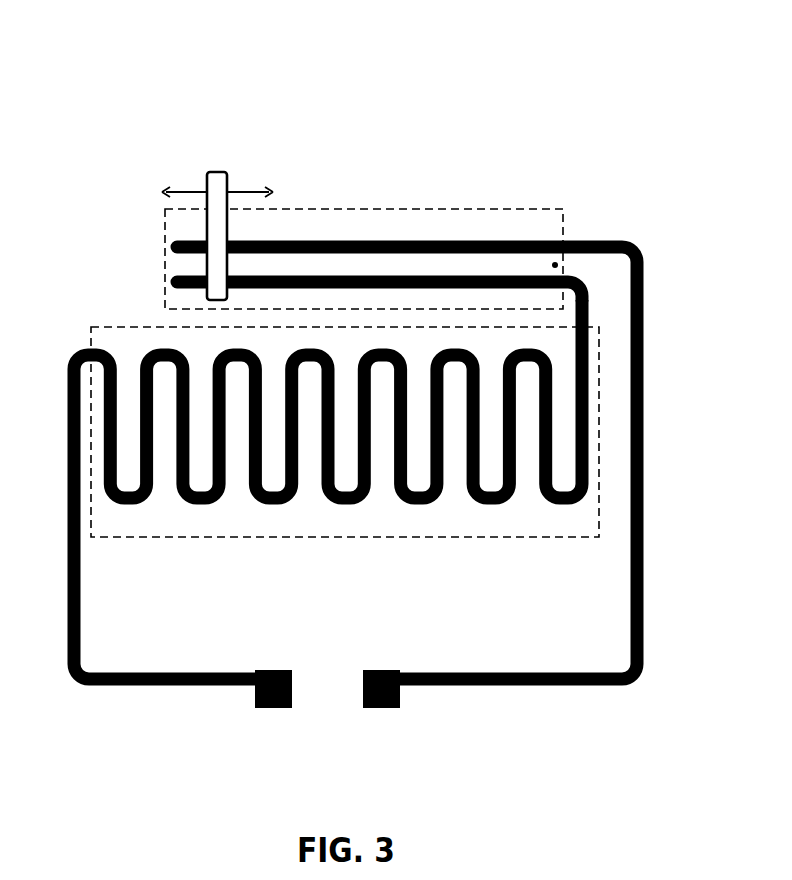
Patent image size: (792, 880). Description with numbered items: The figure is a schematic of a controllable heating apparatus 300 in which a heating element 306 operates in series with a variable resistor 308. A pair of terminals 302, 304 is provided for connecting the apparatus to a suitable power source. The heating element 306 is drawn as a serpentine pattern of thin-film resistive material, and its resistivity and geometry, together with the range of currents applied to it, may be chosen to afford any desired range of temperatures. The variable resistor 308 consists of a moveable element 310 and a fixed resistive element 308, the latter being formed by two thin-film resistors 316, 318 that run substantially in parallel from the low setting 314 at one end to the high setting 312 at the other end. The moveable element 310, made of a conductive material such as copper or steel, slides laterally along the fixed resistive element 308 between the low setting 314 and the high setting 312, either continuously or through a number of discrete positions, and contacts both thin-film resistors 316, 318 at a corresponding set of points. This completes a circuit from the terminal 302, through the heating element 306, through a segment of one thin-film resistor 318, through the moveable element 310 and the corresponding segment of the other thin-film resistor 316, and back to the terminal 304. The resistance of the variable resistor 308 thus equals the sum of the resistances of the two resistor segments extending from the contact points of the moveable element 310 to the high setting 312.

The controllable heating apparatus 300 is at (647, 78).
The terminal 302 is at (263, 710).
The terminal 304 is at (372, 710).
The heating element 306 is at (297, 540).
The variable resistor / fixed resistive element 308 is at (428, 209).
The moveable element 310 is at (222, 172).
The high setting 312 is at (555, 263).
The low setting 314 is at (183, 265).
The thin-film resistor 316 is at (418, 240).
The thin-film resistor 318 is at (410, 278).